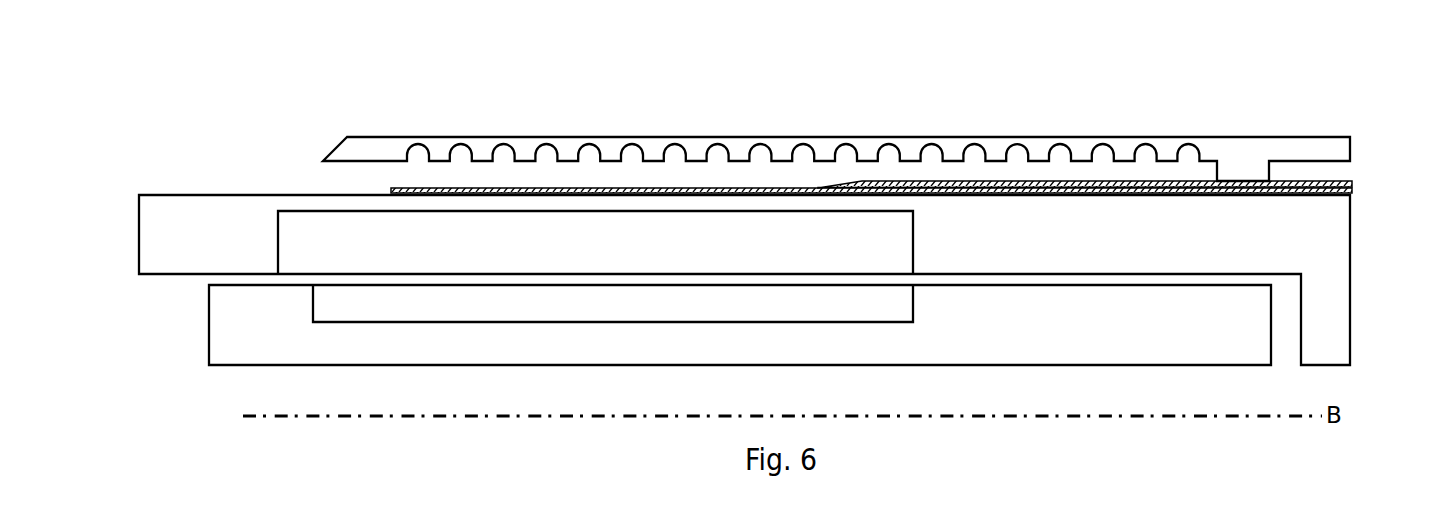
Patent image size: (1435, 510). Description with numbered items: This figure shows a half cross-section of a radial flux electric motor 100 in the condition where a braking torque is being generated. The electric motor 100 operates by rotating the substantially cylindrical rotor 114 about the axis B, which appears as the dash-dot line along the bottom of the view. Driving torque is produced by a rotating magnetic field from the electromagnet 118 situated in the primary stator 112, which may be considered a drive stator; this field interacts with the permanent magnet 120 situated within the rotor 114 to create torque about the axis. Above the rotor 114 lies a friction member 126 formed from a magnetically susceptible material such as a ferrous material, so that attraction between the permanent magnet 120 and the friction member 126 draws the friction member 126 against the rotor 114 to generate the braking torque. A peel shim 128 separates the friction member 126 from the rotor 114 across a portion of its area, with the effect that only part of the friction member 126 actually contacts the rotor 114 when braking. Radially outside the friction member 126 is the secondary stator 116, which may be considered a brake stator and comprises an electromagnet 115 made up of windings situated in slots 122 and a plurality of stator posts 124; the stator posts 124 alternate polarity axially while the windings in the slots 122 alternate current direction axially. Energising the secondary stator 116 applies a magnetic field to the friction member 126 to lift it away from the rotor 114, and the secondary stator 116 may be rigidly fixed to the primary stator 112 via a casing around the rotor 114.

The electric motor 100 is at (170, 92).
The primary stator 112 is at (225, 336).
The rotor 114 is at (155, 253).
The electromagnet 115 is at (294, 145).
The secondary stator 116 is at (365, 148).
The electromagnet 118 is at (571, 318).
The permanent magnet 120 is at (571, 260).
The slots 122 is at (418, 152).
The stator posts 124 is at (482, 152).
The friction member 126 is at (753, 182).
The peel shim 128 is at (1352, 188).